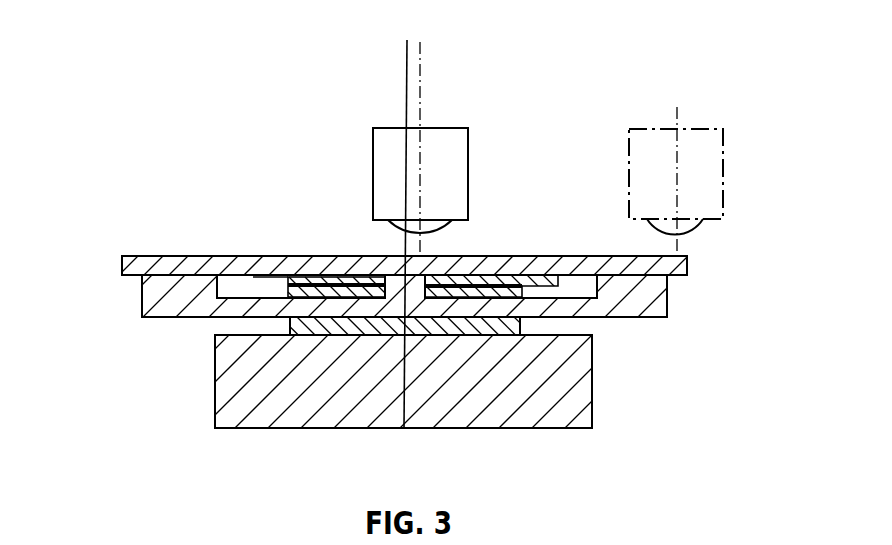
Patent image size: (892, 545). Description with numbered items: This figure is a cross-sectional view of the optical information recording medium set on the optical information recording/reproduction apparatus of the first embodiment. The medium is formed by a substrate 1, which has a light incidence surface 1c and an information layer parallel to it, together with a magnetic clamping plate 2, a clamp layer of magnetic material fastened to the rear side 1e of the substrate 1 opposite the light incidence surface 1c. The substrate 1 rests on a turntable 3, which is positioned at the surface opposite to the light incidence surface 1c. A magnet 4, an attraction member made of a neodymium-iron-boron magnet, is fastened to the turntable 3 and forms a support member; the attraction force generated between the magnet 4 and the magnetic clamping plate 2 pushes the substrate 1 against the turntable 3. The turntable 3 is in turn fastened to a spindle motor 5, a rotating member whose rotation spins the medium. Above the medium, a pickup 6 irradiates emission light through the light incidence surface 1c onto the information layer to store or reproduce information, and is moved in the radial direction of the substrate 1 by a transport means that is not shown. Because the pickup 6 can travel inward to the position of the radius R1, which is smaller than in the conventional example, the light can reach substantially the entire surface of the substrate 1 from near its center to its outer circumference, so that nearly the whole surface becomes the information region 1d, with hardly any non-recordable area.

The substrate 1 is at (132, 266).
The light incidence surface 1c is at (200, 256).
The information region 1d is at (675, 243).
The rear side 1e is at (688, 279).
The magnetic clamping plate 2 is at (288, 281).
The turntable 3 is at (150, 300).
The magnet 4 is at (322, 285).
The spindle motor 5 is at (578, 383).
The pickup 6 is at (460, 140).
The radius R1 is at (375, 50).